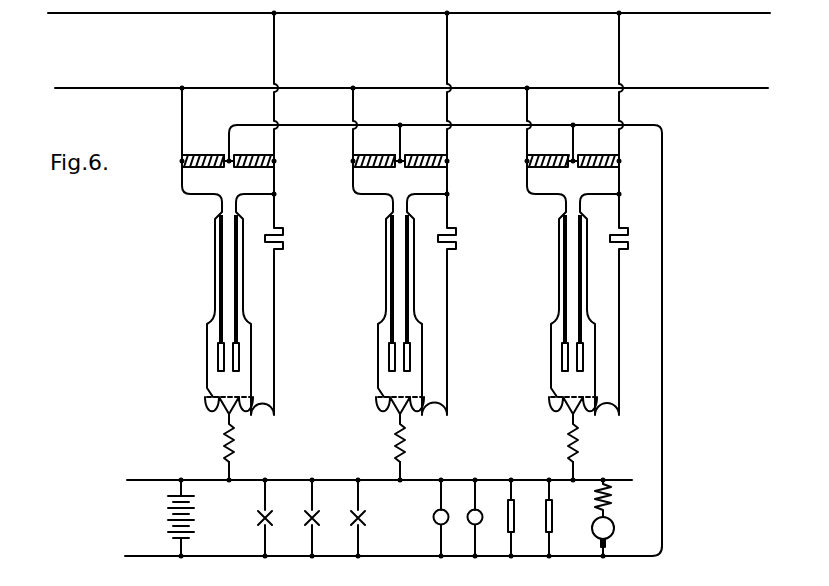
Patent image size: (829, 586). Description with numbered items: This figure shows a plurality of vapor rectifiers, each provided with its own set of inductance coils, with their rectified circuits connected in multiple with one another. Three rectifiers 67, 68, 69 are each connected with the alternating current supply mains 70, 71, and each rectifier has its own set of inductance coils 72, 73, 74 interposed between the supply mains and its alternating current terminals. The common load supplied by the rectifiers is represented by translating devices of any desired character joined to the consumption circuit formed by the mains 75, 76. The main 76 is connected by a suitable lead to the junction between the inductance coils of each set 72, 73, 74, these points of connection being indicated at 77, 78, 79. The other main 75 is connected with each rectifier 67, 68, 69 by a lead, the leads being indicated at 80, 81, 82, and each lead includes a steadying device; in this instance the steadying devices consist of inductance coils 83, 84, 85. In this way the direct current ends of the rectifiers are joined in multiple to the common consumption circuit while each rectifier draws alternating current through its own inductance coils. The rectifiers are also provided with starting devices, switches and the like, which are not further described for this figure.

The alternating current supply main 70 is at (409, 27).
The alternating current supply main 71 is at (411, 99).
The set of inductance coils 72 is at (228, 173).
The set of inductance coils 73 is at (400, 173).
The set of inductance coils 74 is at (573, 173).
The point of connection 77 is at (231, 159).
The point of connection 78 is at (402, 159).
The point of connection 79 is at (575, 159).
The rectifier 67 is at (218, 380).
The rectifier 68 is at (389, 380).
The rectifier 69 is at (562, 380).
The inductance coil 83 is at (237, 443).
The inductance coil 84 is at (408, 443).
The inductance coil 85 is at (581, 443).
The lead 80 is at (235, 469).
The lead 81 is at (406, 469).
The lead 82 is at (579, 469).
The main 75 is at (379, 472).
The main 76 is at (388, 547).